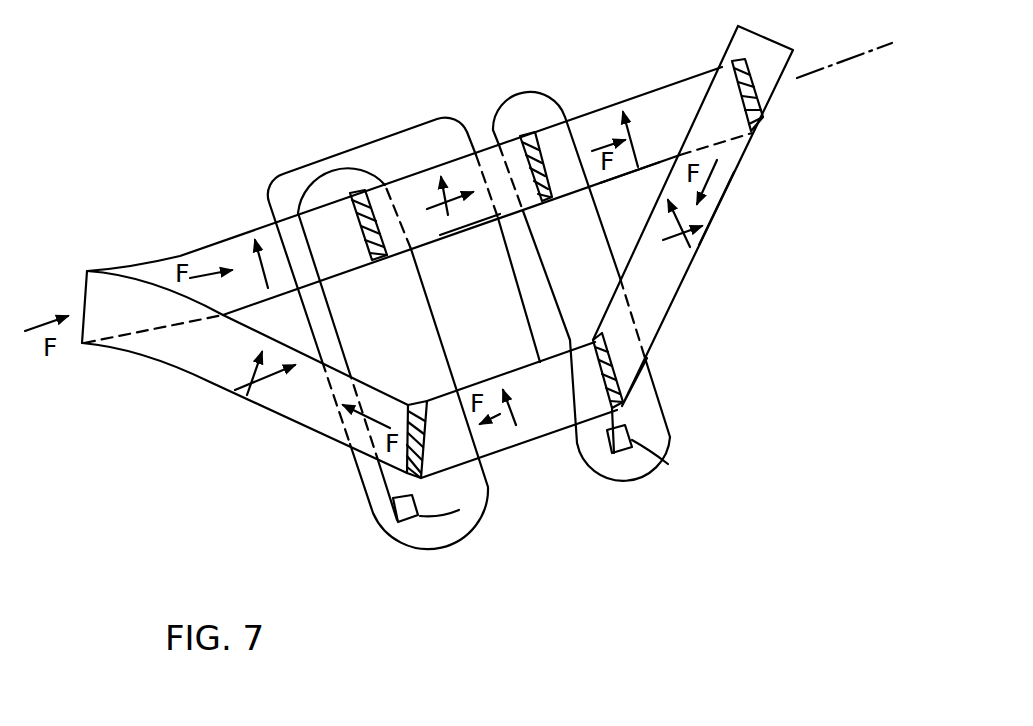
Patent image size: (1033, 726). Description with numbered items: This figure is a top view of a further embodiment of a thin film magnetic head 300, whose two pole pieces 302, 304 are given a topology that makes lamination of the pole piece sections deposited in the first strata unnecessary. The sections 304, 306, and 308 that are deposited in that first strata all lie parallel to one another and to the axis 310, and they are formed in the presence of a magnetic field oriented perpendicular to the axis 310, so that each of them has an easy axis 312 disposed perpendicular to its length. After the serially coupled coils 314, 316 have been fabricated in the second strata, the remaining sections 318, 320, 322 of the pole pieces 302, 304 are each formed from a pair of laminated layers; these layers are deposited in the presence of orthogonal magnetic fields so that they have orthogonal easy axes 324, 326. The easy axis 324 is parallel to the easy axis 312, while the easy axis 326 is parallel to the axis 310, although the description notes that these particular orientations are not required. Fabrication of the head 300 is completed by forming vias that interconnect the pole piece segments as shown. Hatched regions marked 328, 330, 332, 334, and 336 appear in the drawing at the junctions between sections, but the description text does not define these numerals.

The thin film head 300 is at (496, 40).
The pole piece 302 is at (607, 86).
The pole piece 304 is at (184, 254).
The section 306 is at (531, 438).
The section 308 is at (630, 172).
The axis 310 is at (863, 55).
The easy axis 312 is at (628, 112).
The coil 314 is at (373, 520).
The coil 316 is at (622, 478).
The section 318 is at (205, 383).
The section 320 is at (467, 231).
The section 322 is at (712, 228).
The easy axis 324 is at (690, 250).
The easy axis 326 is at (681, 246).
The first sensing element 328 is at (383, 259).
The second sensing element 330 is at (553, 200).
The third sensing element 332 is at (762, 120).
The fourth sensing element 334 is at (416, 401).
The fifth sensing element 336 is at (594, 339).